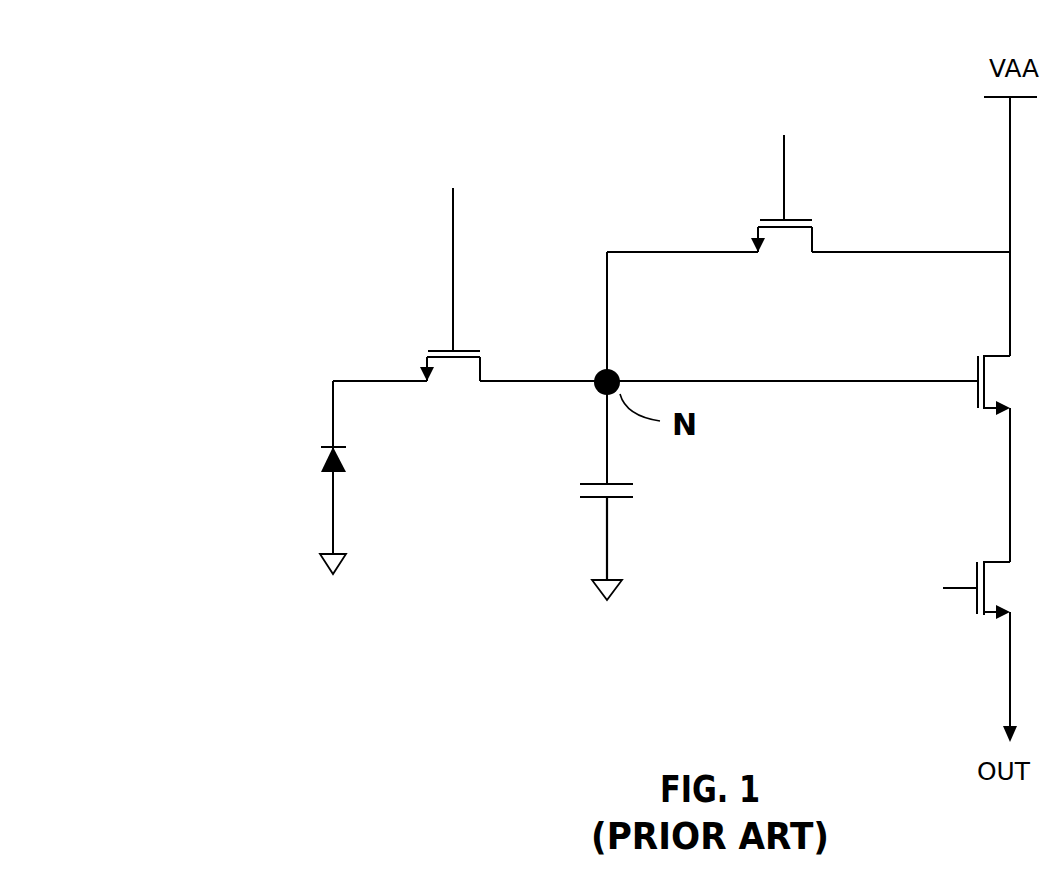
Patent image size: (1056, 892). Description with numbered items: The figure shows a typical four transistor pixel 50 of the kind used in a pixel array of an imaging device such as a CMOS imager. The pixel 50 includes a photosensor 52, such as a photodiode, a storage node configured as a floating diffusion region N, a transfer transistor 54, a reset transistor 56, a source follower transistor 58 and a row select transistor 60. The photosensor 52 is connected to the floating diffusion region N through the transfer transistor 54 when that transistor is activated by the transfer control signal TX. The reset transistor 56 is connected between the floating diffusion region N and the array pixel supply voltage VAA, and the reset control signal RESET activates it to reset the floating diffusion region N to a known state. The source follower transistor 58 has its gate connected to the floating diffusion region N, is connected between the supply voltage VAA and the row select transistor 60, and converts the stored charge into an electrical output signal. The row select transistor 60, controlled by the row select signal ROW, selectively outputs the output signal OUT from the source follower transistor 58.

The four transistor pixel 50 is at (326, 182).
The photosensor 52 is at (322, 446).
The transfer transistor 54 is at (427, 343).
The reset transistor 56 is at (765, 215).
The source follower transistor 58 is at (1000, 354).
The row select transistor 60 is at (987, 561).